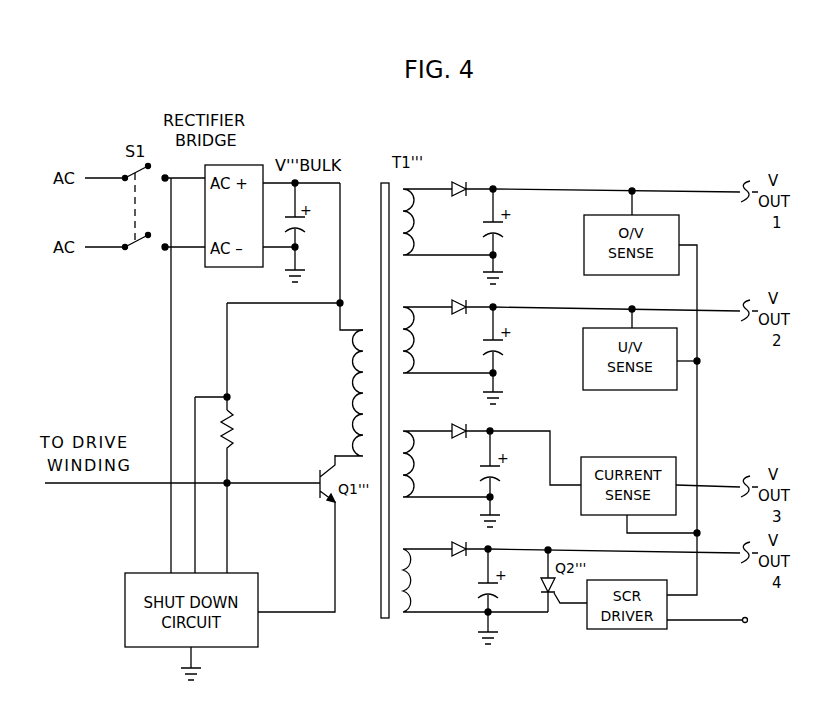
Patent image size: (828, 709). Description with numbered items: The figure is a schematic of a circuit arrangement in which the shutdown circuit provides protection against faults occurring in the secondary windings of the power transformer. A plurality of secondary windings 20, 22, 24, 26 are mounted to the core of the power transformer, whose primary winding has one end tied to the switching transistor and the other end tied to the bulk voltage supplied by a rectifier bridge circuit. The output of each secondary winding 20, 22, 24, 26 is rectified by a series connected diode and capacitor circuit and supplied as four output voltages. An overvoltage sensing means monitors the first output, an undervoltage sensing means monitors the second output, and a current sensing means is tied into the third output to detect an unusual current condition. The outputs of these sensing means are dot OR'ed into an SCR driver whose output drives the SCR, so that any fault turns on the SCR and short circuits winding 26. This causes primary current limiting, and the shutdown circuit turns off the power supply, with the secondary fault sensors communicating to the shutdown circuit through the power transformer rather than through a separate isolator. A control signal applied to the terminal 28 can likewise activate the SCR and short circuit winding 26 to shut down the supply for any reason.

The secondary winding 20 is at (448, 222).
The secondary winding 22 is at (448, 340).
The secondary winding 24 is at (446, 464).
The secondary winding 26 is at (475, 580).
The terminal 28 is at (722, 631).